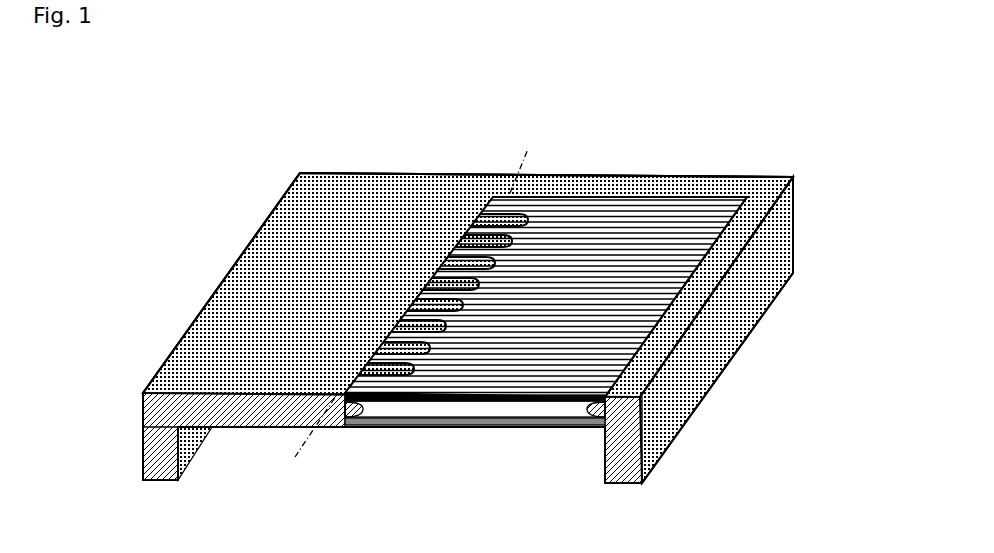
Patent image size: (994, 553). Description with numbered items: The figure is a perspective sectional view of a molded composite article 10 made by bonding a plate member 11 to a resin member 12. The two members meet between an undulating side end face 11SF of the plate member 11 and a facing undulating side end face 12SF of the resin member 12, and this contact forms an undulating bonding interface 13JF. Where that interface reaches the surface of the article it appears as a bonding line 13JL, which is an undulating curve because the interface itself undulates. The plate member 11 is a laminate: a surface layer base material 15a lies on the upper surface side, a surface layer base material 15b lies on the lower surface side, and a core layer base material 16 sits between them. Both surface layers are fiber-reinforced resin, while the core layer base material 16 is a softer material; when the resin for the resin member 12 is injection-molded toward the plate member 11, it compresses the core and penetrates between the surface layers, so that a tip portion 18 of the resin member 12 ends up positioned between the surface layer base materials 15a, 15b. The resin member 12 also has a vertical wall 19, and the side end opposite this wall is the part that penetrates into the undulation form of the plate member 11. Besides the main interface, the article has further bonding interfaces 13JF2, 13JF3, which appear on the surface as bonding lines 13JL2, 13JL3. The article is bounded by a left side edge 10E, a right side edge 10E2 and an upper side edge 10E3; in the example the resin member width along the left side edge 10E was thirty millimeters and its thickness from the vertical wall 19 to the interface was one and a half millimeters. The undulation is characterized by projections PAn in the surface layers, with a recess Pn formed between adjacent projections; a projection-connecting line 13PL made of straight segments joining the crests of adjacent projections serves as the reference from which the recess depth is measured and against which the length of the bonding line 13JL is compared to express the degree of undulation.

The molded composite article 10 is at (432, 156).
The resin member 12 is at (380, 197).
The plate member 11 is at (568, 232).
The left side edge 10E is at (202, 313).
The right side edge 10E2 is at (675, 383).
The upper side edge 10E3 is at (473, 177).
The recess Pn is at (433, 277).
The projection PAn is at (417, 293).
The undulating side end face of the resin member 12SF is at (363, 384).
The undulating side end face of the plate member 11SF is at (267, 428).
The surface layer base material 15a is at (602, 222).
The surface layer base material 15b is at (520, 420).
The core layer base material 16 is at (495, 408).
The tip portion 18 is at (348, 393).
The vertical wall 19 is at (150, 425).
The bonding interface 13JF is at (372, 338).
The bonding interface 13JF2 is at (683, 307).
The bonding interface 13JF3 is at (667, 188).
The bonding line 13JL is at (513, 193).
The bonding line 13JL2 is at (668, 338).
The bonding line 13JL3 is at (707, 197).
The projection-connecting line 13PL is at (307, 440).